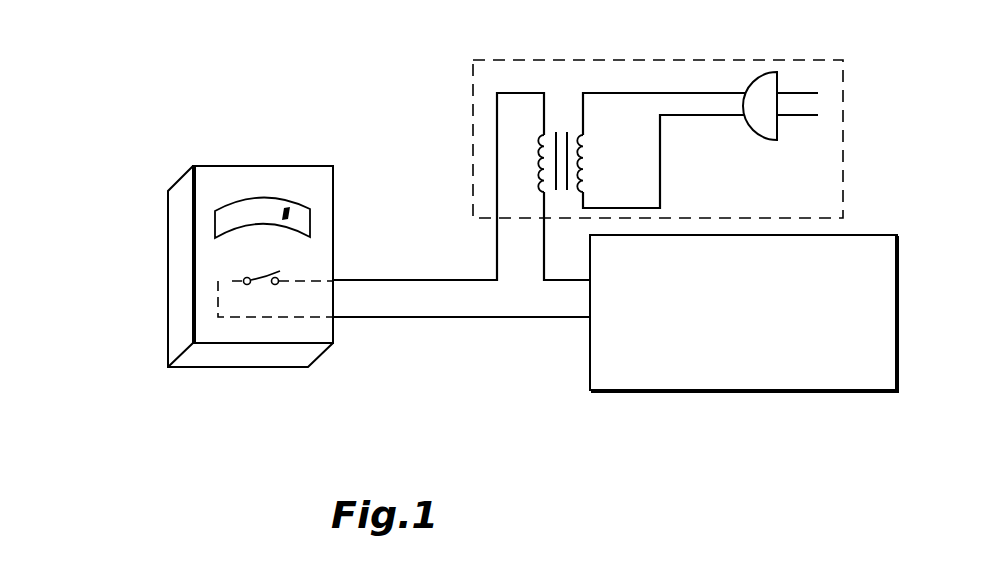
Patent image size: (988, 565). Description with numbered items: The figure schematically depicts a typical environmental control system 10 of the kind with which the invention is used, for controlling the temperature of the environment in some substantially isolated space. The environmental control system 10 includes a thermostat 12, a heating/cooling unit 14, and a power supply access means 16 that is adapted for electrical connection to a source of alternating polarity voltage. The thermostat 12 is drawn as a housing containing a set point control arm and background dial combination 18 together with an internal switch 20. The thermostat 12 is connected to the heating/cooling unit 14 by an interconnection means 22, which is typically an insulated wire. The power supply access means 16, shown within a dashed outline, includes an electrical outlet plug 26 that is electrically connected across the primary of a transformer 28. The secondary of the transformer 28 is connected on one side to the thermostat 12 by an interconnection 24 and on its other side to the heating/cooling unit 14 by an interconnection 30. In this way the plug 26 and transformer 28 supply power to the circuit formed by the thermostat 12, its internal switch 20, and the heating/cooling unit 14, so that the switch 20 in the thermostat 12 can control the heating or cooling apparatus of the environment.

The environmental control system 10 is at (345, 82).
The thermostat 12 is at (148, 220).
The heating/cooling unit 14 is at (915, 240).
The power supply access means 16 is at (795, 48).
The set point control arm and background dial combination 18 is at (262, 178).
The internal switch 20 is at (242, 269).
The interconnection means 22 is at (422, 332).
The interconnection 24 is at (424, 262).
The electrical outlet plug 26 is at (764, 157).
The transformer 28 is at (533, 151).
The interconnection 30 is at (576, 258).